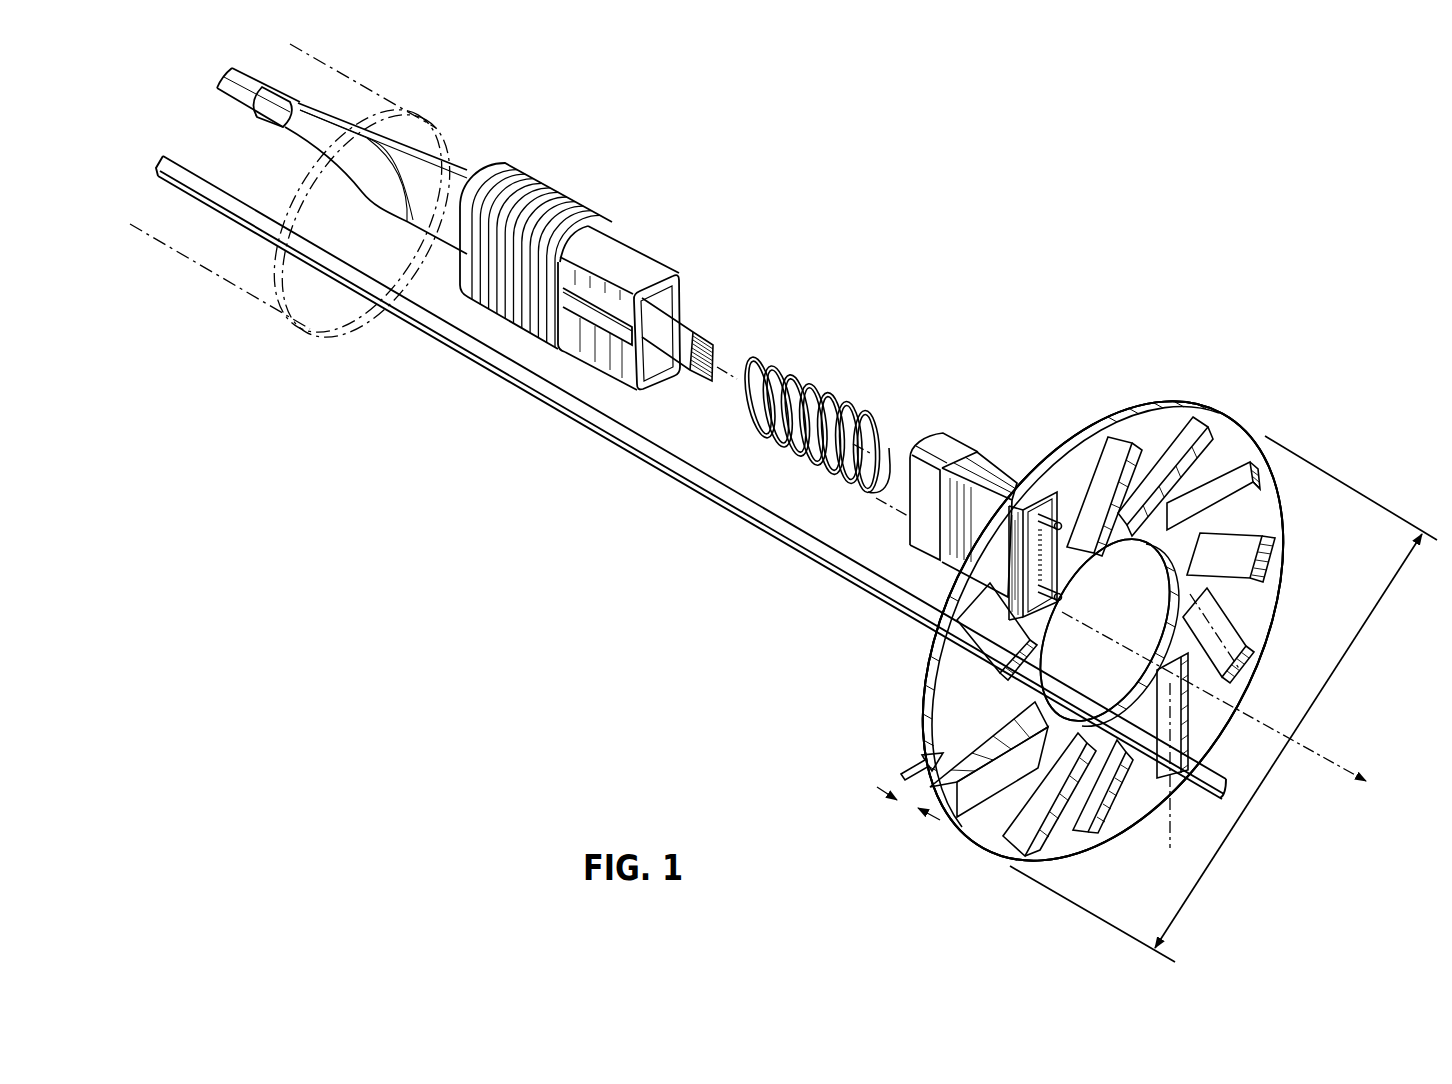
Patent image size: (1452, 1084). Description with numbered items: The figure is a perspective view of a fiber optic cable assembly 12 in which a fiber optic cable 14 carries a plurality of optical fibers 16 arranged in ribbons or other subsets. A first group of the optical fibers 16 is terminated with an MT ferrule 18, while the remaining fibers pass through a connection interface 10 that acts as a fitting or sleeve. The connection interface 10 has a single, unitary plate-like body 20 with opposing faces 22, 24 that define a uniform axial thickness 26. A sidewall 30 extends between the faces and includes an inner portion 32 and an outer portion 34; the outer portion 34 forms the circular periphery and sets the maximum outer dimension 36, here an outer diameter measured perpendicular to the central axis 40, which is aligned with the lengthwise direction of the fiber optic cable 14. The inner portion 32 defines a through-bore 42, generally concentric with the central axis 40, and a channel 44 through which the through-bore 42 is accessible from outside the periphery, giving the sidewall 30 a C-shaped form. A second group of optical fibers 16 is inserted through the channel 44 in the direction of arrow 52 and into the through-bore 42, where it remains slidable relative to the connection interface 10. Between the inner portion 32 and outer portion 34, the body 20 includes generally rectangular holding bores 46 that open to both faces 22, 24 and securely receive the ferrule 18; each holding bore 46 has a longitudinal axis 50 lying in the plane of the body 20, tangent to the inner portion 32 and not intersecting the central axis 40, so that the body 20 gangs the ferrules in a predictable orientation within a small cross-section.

The connection interface 10 is at (1213, 360).
The fiber optic cable assembly 12 is at (858, 214).
The fiber optic cable 14 is at (212, 268).
The optical fibers 16 is at (703, 341).
The ferrule 18 is at (988, 467).
The plate-like body 20 is at (1244, 421).
The face 22 is at (1266, 609).
The face 24 is at (1067, 447).
The axial thickness 26 is at (908, 808).
The sidewall 30 is at (924, 705).
The inner portion 32 is at (1131, 688).
The outer portion 34 is at (1111, 421).
The maximum outer dimension 36 is at (1333, 676).
The central axis 40 is at (1095, 630).
The through-bore 42 is at (1105, 630).
The channel 44 is at (985, 720).
The holding bores 46 is at (1272, 563).
The longitudinal axis 50 is at (1250, 688).
The arrow 52 is at (914, 765).